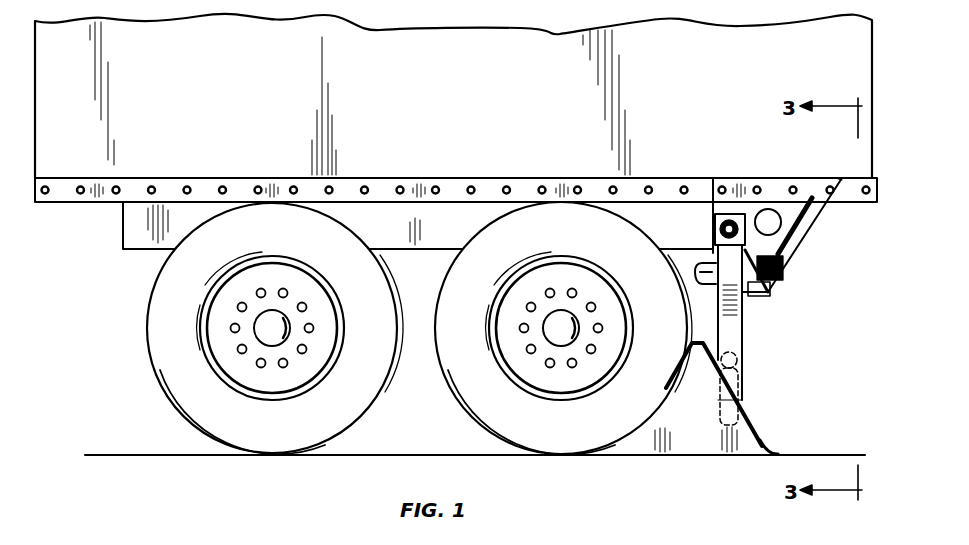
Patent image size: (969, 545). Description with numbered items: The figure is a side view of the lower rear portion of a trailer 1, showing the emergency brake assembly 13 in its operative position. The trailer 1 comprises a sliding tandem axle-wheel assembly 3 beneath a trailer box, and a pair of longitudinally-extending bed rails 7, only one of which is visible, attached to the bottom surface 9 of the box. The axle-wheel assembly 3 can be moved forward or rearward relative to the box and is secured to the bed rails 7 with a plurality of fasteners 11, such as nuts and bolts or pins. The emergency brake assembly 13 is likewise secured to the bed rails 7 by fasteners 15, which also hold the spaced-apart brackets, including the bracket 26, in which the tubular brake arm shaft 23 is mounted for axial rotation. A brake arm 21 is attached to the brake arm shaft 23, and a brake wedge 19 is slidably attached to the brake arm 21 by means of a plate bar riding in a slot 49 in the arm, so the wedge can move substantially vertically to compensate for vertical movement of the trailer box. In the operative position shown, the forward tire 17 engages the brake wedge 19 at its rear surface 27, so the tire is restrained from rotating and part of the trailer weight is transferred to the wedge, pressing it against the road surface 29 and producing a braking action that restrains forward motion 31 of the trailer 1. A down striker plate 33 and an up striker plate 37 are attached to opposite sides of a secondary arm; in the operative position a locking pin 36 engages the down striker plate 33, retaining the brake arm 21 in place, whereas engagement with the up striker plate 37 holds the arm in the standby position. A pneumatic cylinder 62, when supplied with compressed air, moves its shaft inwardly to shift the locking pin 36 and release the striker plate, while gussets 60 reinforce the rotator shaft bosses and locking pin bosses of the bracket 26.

The trailer 1 is at (97, 216).
The sliding tandem axle-wheel assembly 3 is at (144, 284).
The bed rails 7 is at (455, 178).
The bottom surface 9 is at (384, 178).
The fasteners 11 is at (221, 185).
The emergency brake assembly 13 is at (740, 295).
The fasteners 15 is at (793, 186).
The forward tires 17 is at (485, 405).
The brake wedge 19 is at (766, 448).
The brake arm 21 is at (745, 325).
The brake arm shaft 23 is at (714, 226).
The bracket 26 is at (812, 222).
The rear surface 27 is at (670, 385).
The road surface 29 is at (352, 457).
The forward motion 31 is at (730, 48).
The down striker plate 33 is at (762, 292).
The locking pin 36 is at (780, 268).
The up striker plate 37 is at (695, 272).
The slot 49 is at (742, 368).
The gussets 60 is at (700, 240).
The pneumatic cylinder 62 is at (795, 245).